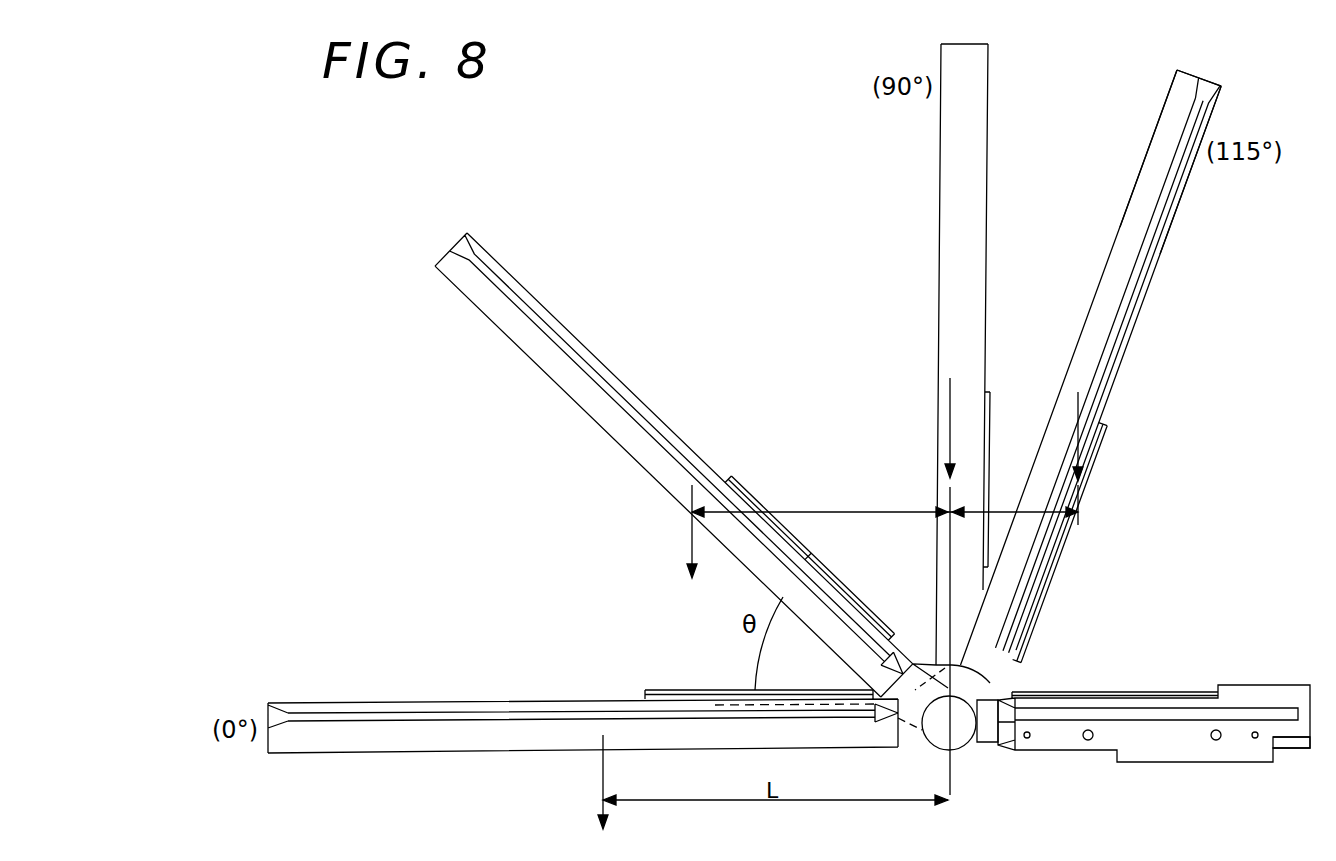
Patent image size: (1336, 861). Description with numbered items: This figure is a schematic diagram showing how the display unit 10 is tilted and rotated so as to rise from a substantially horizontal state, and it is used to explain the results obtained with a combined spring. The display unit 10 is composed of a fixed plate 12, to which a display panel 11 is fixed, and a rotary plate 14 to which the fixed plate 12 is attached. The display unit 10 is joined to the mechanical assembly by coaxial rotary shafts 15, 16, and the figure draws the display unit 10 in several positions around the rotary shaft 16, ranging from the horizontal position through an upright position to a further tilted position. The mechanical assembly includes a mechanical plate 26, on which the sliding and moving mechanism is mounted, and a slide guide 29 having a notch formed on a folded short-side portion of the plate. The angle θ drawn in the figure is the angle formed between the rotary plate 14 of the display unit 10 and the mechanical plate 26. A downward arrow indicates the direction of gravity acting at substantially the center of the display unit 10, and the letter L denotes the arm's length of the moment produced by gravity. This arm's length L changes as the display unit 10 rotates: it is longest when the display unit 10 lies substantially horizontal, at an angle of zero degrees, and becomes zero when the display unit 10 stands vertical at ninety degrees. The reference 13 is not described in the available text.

The display unit 10 is at (595, 721).
The display panel 11 is at (1126, 201).
The fixed plate 12 is at (1190, 90).
The arm in 90 degree position 13 is at (963, 354).
The rotary plate 14 is at (1100, 425).
The rotary shaft 15 is at (691, 465).
The rotary shaft 16 is at (958, 748).
The mechanical plate 26 is at (1289, 742).
The slide guide 29 is at (1167, 743).